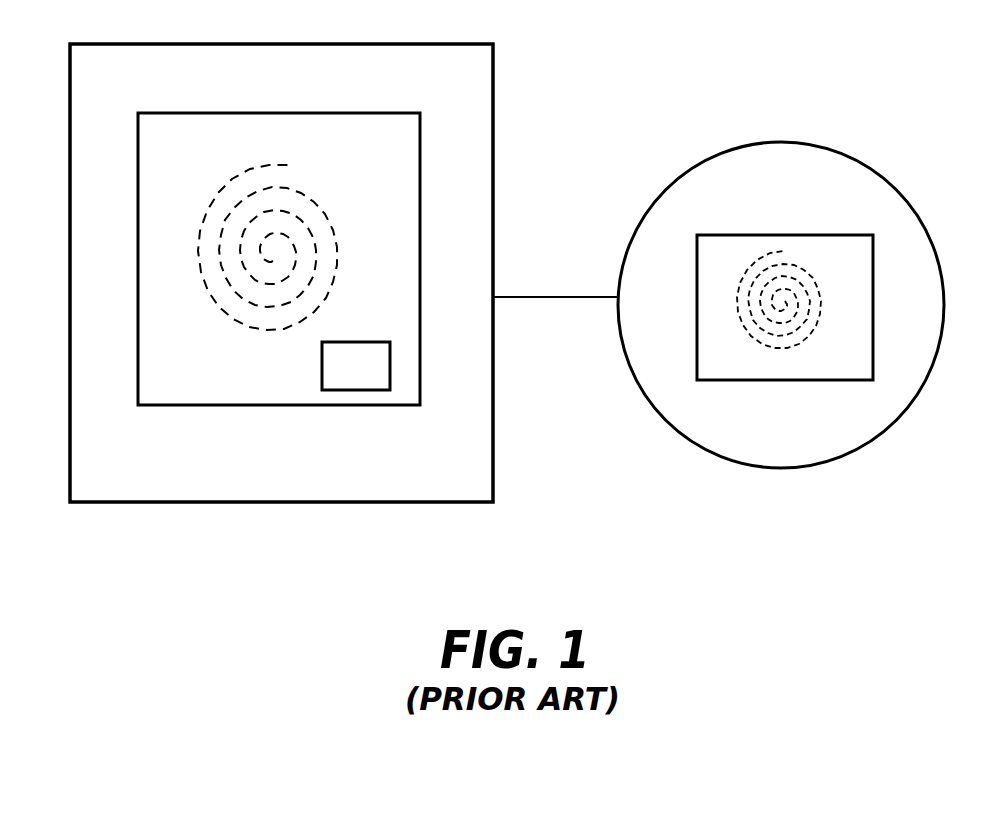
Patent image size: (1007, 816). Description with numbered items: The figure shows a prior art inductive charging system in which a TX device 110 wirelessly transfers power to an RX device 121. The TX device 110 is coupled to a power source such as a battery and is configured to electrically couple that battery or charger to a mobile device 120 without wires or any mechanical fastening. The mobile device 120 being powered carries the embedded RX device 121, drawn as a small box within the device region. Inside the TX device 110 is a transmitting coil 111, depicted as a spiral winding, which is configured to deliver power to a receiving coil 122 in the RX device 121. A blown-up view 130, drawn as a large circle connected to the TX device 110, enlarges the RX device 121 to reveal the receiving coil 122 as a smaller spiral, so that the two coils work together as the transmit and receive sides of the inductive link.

The TX device 110 is at (283, 486).
The mobile device 120 is at (405, 148).
The transmitting coil 111 is at (340, 218).
The RX device 121 is at (390, 362).
The blown-up view 130 is at (766, 174).
The receiving coil 122 is at (828, 293).